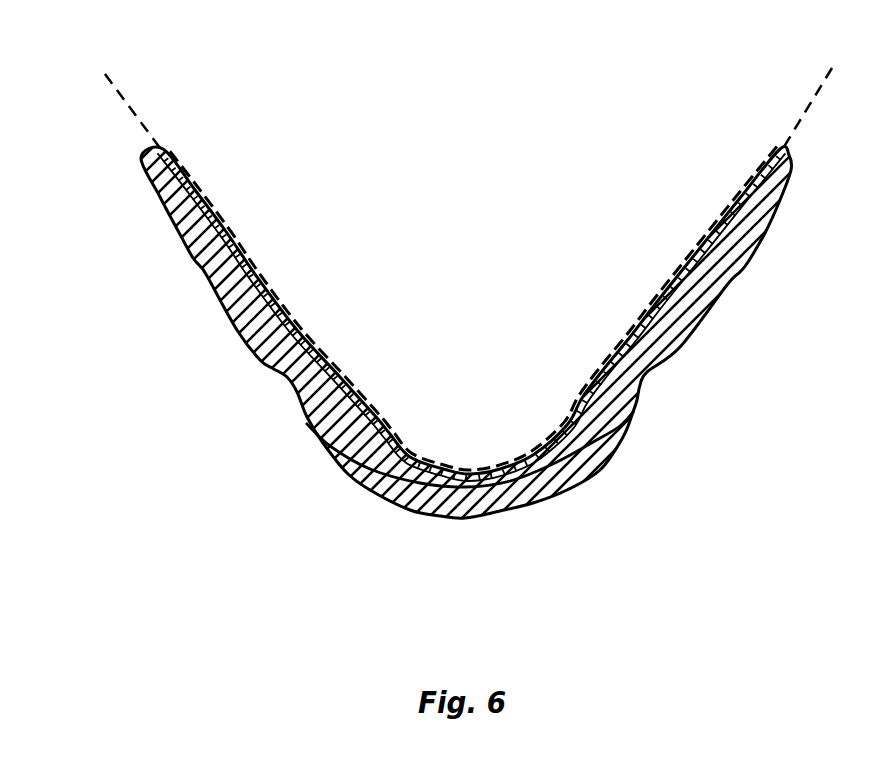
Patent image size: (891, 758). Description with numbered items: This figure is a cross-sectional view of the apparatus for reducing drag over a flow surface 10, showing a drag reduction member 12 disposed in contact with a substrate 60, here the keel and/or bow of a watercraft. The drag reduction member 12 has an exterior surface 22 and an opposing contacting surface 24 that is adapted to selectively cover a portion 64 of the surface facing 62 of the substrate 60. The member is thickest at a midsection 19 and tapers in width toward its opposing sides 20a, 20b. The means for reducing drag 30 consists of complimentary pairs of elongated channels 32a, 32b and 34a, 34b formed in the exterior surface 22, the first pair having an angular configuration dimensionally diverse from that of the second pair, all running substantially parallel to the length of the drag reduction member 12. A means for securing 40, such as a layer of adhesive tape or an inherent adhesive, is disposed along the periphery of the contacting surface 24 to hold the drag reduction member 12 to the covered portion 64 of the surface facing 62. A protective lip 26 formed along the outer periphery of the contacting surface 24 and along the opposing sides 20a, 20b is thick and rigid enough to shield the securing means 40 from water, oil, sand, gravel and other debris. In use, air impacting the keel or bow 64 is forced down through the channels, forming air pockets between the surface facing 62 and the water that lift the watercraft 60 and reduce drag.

The apparatus for reducing drag over a flow surface 10 is at (268, 586).
The drag reduction member 12 is at (578, 501).
The midsection 19 is at (470, 518).
The opposing side 20a is at (145, 163).
The opposing side 20b is at (795, 163).
The exterior surface 22 is at (783, 200).
The contacting surface 24 is at (633, 333).
The protective lip 26 is at (160, 153).
The means for reducing drag 30 is at (218, 409).
The first elongated channel 32a is at (297, 397).
The first elongated channel 32b is at (638, 395).
The second elongated channel 34a is at (203, 267).
The second elongated channel 34b is at (728, 280).
The means for securing 40 is at (263, 283).
The substrate 60 is at (449, 241).
The surface facing 62 is at (817, 90).
The covered portion 64 is at (381, 413).